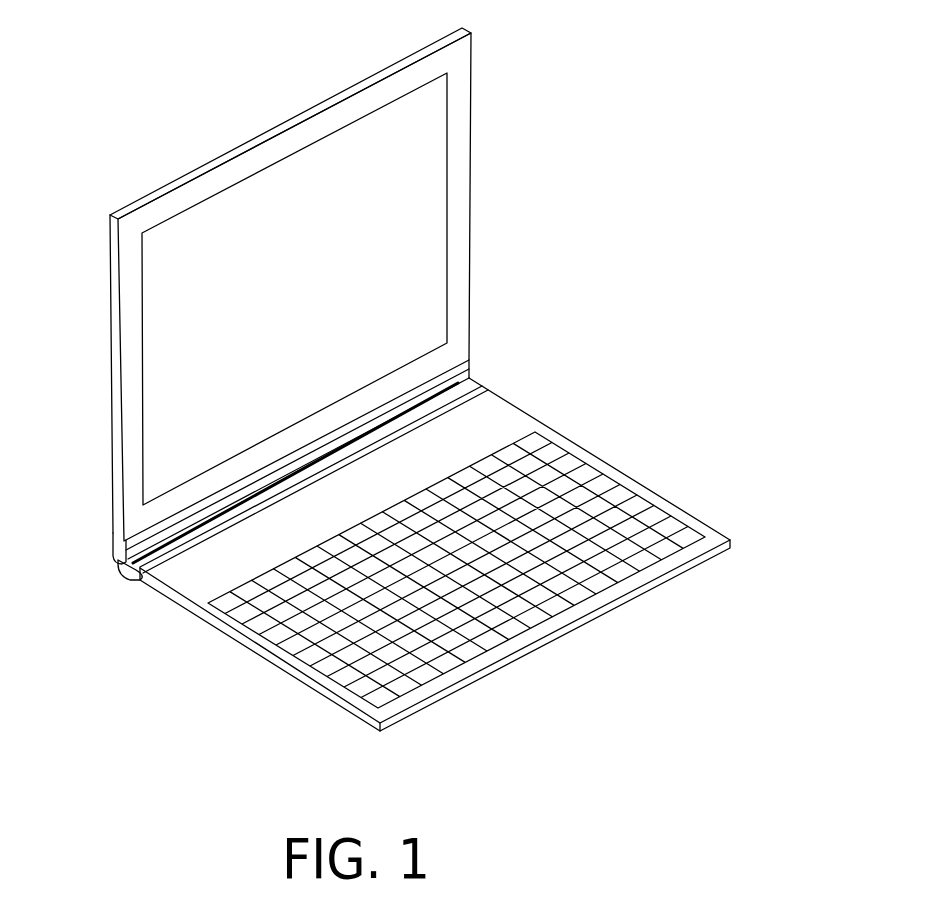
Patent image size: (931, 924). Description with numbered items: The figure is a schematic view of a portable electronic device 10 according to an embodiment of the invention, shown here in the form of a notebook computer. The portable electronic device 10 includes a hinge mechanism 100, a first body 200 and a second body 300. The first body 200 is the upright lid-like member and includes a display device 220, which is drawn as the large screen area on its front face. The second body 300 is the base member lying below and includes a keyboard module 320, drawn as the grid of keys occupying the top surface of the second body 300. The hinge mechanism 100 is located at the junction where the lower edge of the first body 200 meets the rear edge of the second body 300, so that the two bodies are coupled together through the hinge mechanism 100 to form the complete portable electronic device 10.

The portable electronic device 10 is at (762, 680).
The hinge mechanism 100 is at (467, 377).
The first body 200 is at (458, 283).
The display device 220 is at (420, 198).
The second body 300 is at (493, 420).
The keyboard module 320 is at (583, 468).